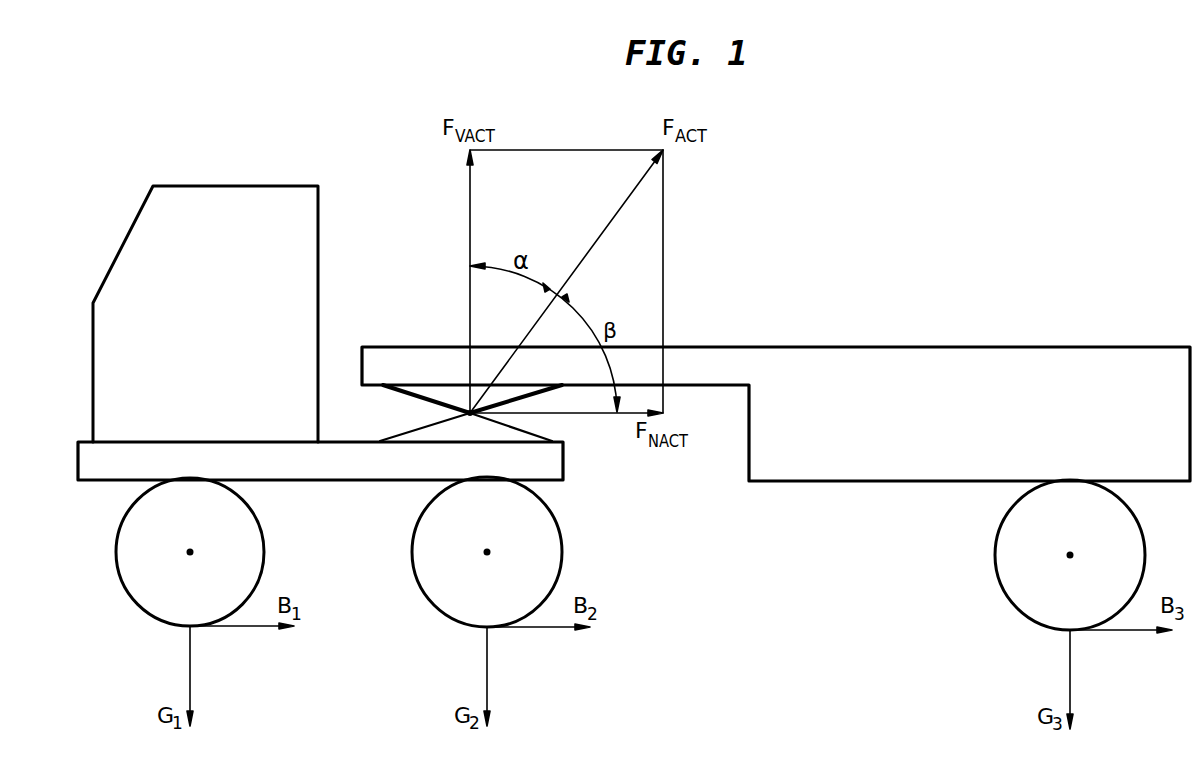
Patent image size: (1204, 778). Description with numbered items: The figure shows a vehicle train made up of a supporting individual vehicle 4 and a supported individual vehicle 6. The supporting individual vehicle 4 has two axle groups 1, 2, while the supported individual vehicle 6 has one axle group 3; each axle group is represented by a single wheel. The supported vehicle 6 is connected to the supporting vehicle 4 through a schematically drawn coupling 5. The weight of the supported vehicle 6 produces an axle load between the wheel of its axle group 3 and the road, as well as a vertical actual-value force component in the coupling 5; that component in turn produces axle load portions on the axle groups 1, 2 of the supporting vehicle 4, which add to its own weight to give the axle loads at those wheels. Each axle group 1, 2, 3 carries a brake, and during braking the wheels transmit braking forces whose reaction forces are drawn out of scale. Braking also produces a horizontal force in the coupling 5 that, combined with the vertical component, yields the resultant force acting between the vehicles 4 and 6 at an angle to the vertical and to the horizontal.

The axle group 1 is at (190, 552).
The axle group 2 is at (487, 552).
The axle group 3 is at (1070, 555).
The supporting individual vehicle 4 is at (173, 253).
The coupling 5 is at (470, 413).
The supported individual vehicle 6 is at (917, 347).